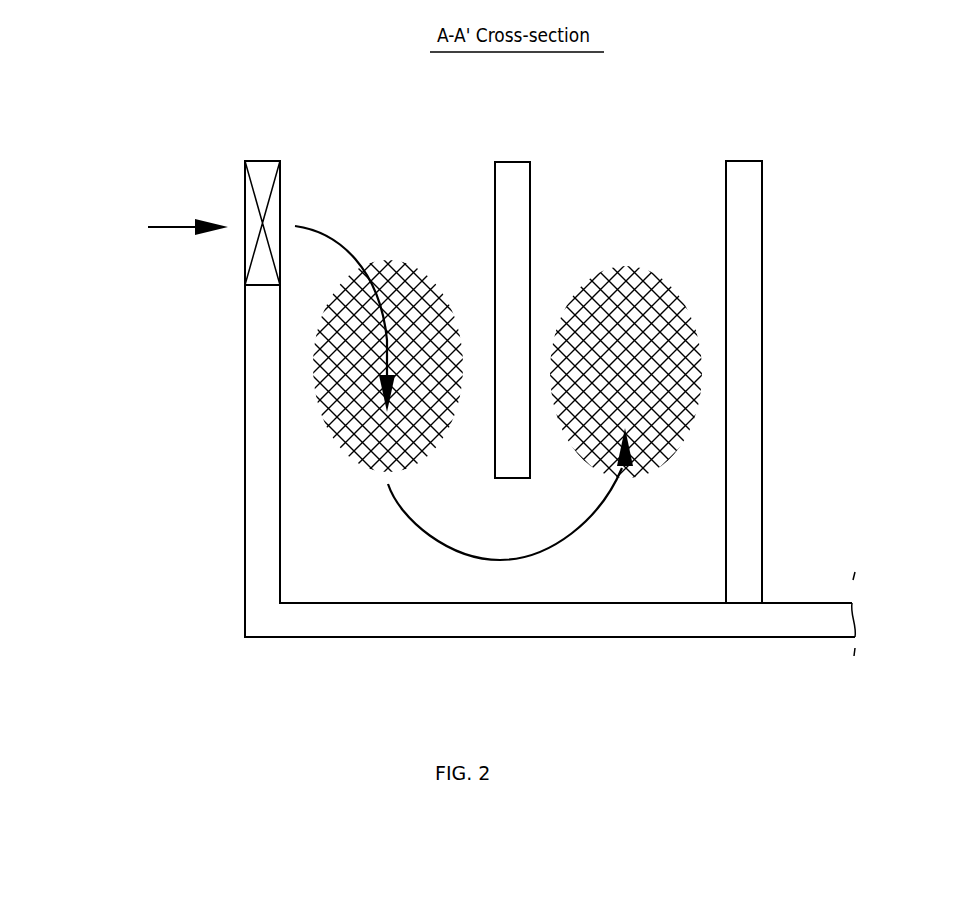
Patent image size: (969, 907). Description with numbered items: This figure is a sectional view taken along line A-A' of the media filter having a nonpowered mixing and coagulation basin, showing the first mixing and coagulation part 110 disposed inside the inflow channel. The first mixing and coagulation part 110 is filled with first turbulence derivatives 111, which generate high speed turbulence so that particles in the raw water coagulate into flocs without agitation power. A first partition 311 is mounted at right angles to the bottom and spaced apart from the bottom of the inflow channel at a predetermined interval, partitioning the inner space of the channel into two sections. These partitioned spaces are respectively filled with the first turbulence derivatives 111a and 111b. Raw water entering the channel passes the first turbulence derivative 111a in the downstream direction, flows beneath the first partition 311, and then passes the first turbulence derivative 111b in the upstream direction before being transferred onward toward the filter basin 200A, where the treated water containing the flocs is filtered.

The filter basin 200A is at (807, 210).
The first mixing and coagulation part 110 is at (648, 581).
The first turbulence derivatives 111 is at (660, 150).
The first turbulence derivative 111a is at (391, 268).
The first turbulence derivative 111b is at (632, 275).
The first partition 311 is at (514, 170).